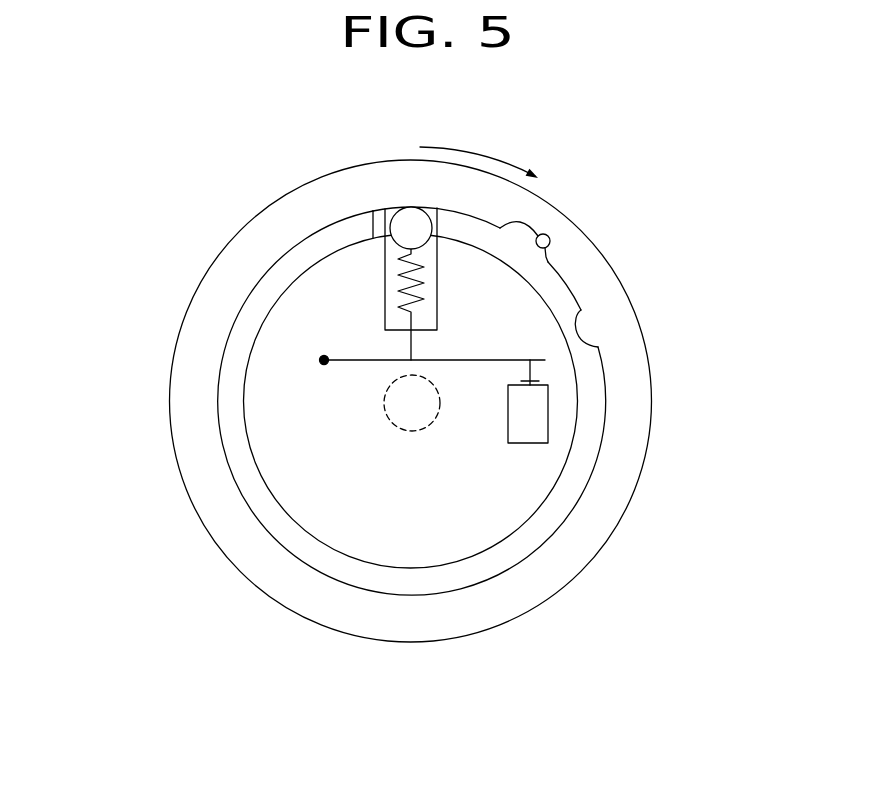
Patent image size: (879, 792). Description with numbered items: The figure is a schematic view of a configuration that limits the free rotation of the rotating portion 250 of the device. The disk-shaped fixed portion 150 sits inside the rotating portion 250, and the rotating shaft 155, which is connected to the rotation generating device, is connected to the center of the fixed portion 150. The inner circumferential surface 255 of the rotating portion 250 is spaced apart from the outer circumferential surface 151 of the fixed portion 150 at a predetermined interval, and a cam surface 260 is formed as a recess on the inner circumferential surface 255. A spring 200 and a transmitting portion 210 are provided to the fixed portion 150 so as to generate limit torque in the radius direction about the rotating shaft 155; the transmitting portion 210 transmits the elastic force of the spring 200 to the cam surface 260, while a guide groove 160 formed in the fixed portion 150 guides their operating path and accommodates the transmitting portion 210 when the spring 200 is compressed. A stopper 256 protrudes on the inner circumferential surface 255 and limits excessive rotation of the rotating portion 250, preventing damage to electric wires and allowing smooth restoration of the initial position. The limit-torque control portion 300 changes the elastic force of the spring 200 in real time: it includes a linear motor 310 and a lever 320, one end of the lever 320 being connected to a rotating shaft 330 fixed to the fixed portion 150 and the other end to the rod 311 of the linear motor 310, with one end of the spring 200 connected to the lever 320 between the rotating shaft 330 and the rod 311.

The fixed portion 150 is at (260, 402).
The outer circumferential surface 151 is at (543, 298).
The rotating shaft 155 is at (400, 382).
The guide groove 160 is at (423, 262).
The spring 200 is at (338, 222).
The transmitting portion 210 is at (405, 216).
The rotating portion 250 is at (635, 412).
The inner circumferential surface 255 is at (598, 347).
The stopper 256 is at (375, 222).
The cam surface 260 is at (550, 245).
The limit-torque control portion 300 is at (485, 550).
The linear motor 310 is at (530, 435).
The rod 311 is at (530, 370).
The lever 320 is at (465, 360).
The rotating shaft 330 is at (324, 365).